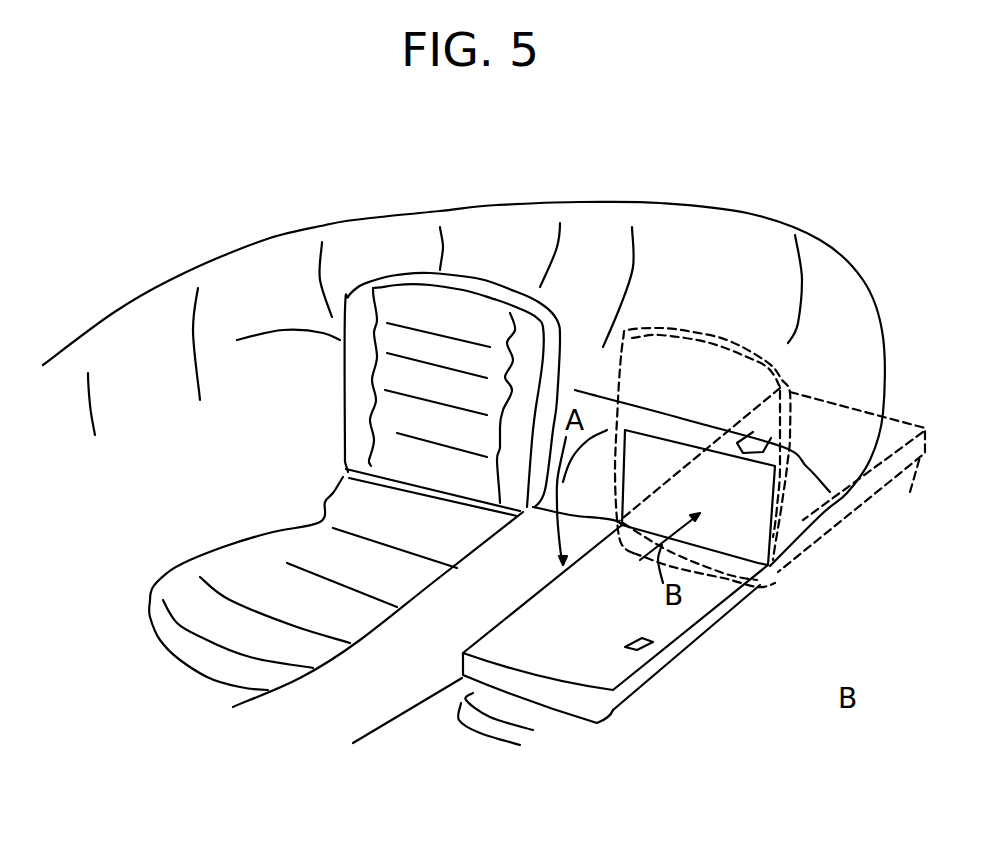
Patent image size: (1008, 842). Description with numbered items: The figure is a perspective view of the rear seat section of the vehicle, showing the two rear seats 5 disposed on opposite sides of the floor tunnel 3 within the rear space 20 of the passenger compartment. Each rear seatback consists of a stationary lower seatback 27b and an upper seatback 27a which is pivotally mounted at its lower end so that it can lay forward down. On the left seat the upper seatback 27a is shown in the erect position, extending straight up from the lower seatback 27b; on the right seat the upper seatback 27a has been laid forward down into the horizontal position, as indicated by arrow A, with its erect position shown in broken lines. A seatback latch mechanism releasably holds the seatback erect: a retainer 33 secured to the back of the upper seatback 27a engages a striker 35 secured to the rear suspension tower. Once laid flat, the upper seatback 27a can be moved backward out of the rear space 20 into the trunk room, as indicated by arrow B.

The floor tunnel 3 is at (337, 718).
The rear seat 5 is at (504, 501).
The rear space 20 is at (504, 501).
The upper seatback 27a is at (370, 282).
The lower seatback 27b is at (330, 500).
The retainer 33 is at (652, 648).
The striker 35 is at (766, 439).